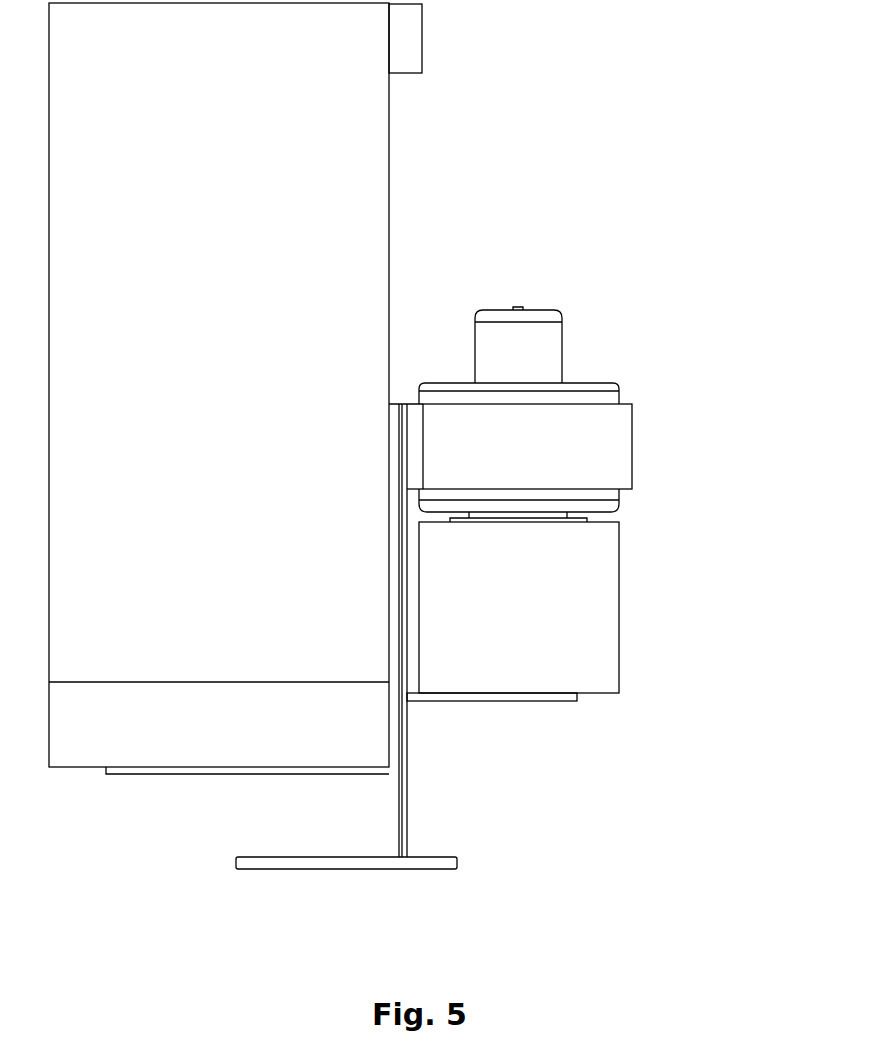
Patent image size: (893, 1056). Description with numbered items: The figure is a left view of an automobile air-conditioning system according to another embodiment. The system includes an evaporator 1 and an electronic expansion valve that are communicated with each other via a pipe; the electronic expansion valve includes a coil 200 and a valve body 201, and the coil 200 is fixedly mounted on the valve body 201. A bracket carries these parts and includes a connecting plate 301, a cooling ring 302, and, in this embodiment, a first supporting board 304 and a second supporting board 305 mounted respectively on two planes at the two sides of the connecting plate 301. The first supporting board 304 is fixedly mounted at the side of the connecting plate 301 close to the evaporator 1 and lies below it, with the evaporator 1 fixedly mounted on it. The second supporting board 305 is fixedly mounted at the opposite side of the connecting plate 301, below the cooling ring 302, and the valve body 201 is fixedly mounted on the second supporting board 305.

The evaporator 1 is at (323, 135).
The coil 200 is at (532, 495).
The valve body 201 is at (539, 645).
The connecting plate 301 is at (397, 720).
The cooling ring 302 is at (566, 444).
The first supporting board 304 is at (293, 770).
The second supporting board 305 is at (522, 697).